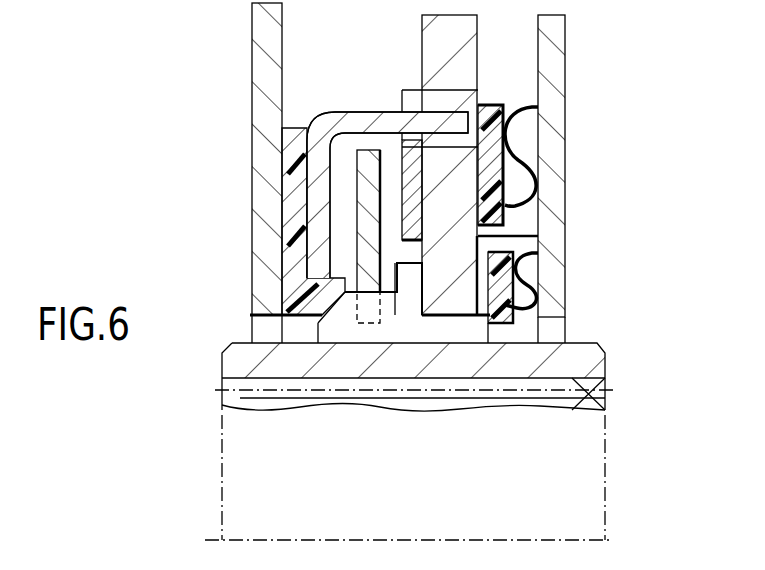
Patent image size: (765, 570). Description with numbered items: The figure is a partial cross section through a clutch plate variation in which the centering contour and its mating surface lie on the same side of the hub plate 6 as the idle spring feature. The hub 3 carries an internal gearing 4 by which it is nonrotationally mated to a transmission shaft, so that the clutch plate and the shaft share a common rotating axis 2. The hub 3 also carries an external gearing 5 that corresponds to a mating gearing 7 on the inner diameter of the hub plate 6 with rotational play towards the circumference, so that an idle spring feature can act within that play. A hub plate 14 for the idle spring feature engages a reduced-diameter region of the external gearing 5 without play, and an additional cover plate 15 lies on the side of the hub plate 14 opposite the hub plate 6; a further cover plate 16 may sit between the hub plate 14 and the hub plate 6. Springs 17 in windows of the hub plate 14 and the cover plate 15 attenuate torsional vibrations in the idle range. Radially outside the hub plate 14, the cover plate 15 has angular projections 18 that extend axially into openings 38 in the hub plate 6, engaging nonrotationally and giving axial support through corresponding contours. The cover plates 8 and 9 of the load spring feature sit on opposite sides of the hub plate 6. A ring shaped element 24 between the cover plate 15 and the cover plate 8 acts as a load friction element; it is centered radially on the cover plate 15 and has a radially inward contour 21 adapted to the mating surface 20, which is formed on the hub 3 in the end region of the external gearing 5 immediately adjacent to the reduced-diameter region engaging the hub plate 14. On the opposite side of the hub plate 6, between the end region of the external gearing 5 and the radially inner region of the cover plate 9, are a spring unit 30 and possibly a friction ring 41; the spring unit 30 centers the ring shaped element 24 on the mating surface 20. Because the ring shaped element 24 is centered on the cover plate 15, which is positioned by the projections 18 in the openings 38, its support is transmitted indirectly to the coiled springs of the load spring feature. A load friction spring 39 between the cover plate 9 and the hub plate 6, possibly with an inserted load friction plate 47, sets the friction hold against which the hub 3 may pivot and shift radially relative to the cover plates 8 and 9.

The rotating axis 2 is at (620, 536).
The hub 3 is at (605, 372).
The internal gearing 4 is at (605, 411).
The external gearing 5 is at (458, 327).
The hub plate 6 is at (463, 44).
The mating gearing 7 is at (443, 317).
The cover plate 8 is at (268, 27).
The cover plate 9 is at (556, 33).
The hub plate for the idle spring feature 14 is at (360, 192).
The cover plate 15 is at (290, 150).
The cover plate 16 is at (538, 236).
The springs 17 is at (343, 172).
The angular projections 18 is at (365, 118).
The mating surface 20 is at (341, 317).
The contour 21 is at (333, 294).
The ring shaped element 24 is at (300, 224).
The spring unit 30 is at (533, 270).
The openings 38 is at (443, 100).
The load friction spring 39 is at (535, 145).
The friction ring 41 is at (515, 307).
The load friction plate 47 is at (478, 180).